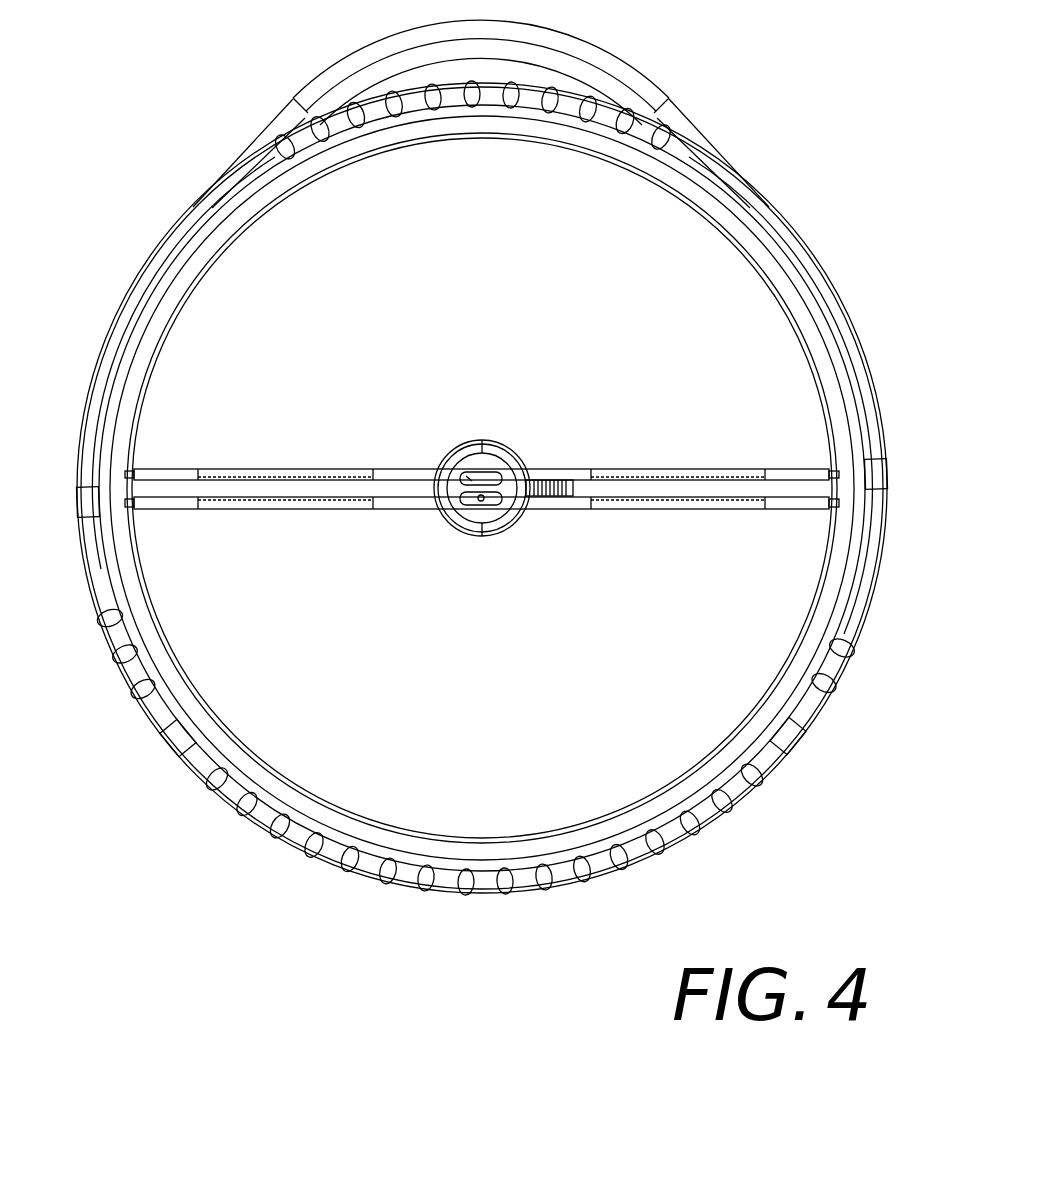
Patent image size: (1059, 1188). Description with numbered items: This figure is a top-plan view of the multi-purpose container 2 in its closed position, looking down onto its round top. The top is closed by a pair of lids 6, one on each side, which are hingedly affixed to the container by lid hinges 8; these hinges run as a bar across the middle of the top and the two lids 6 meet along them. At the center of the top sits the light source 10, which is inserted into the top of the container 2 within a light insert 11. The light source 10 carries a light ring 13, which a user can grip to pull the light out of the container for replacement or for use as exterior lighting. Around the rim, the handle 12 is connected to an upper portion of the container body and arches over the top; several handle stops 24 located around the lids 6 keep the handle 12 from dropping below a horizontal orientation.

The multi-purpose container 2 is at (88, 196).
The lids 6 is at (465, 283).
The lid hinges 8 is at (345, 470).
The light source 10 is at (483, 463).
The light insert 11 is at (513, 452).
The handle 12 is at (625, 62).
The light ring 13 is at (447, 465).
The handle stops 24 is at (160, 727).